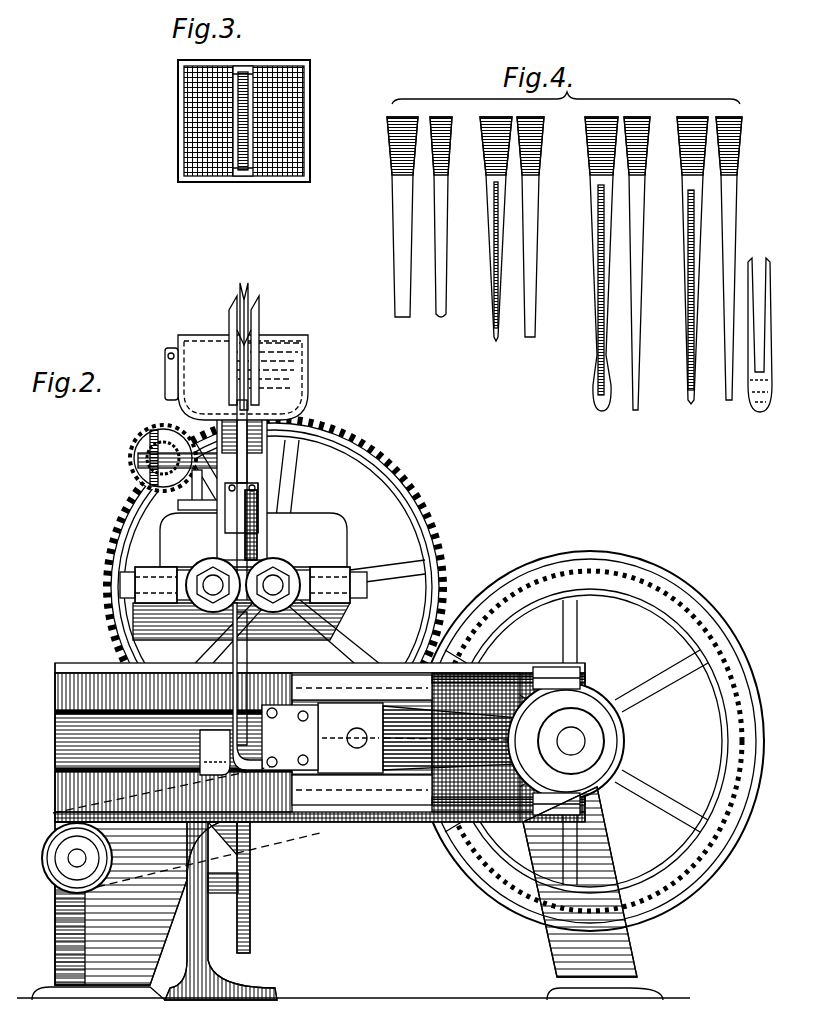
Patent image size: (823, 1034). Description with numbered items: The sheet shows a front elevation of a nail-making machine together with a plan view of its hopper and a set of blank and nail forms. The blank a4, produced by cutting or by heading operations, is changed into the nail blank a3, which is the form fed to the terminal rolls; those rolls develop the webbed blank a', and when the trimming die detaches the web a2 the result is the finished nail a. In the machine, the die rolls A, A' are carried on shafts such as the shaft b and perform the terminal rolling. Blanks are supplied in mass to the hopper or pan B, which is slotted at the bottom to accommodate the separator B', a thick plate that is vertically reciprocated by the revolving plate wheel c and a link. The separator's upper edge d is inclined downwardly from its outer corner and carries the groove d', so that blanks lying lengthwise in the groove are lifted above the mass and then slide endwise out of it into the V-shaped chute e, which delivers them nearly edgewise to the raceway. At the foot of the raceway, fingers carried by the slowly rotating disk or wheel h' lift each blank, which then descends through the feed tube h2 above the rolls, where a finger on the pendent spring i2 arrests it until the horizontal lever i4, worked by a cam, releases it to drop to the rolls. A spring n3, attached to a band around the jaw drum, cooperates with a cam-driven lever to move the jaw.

In FIG. 4, the finished nail a is at (709, 260).
In FIG. 4, the webbed blank a' is at (617, 264).
In FIG. 4, the web a2 is at (758, 412).
In FIG. 4, the nail blank a3 is at (512, 229).
In FIG. 4, the blank a4 is at (419, 217).
In FIG. 2, the die roll A is at (170, 577).
In FIG. 2, the die roll A' is at (324, 568).
In FIG. 2, the shaft b is at (243, 585).
In FIG. 3, the hopper or pan B is at (254, 121).
In FIG. 2, the hopper or pan B is at (246, 377).
In FIG. 3, the separator B' is at (240, 142).
In FIG. 2, the separator B' is at (227, 315).
In FIG. 2, the revolving plate wheel c is at (250, 887).
In FIG. 2, the upper edge of separator d is at (260, 340).
In FIG. 2, the groove d' is at (253, 334).
In FIG. 2, the V-shaped chute e is at (256, 345).
In FIG. 2, the disk or wheel h' is at (251, 441).
In FIG. 2, the feed tube h2 is at (248, 627).
In FIG. 2, the pendent spring i2 is at (245, 522).
In FIG. 2, the horizontal lever i4 is at (284, 565).
In FIG. 2, the spring n3 is at (250, 740).